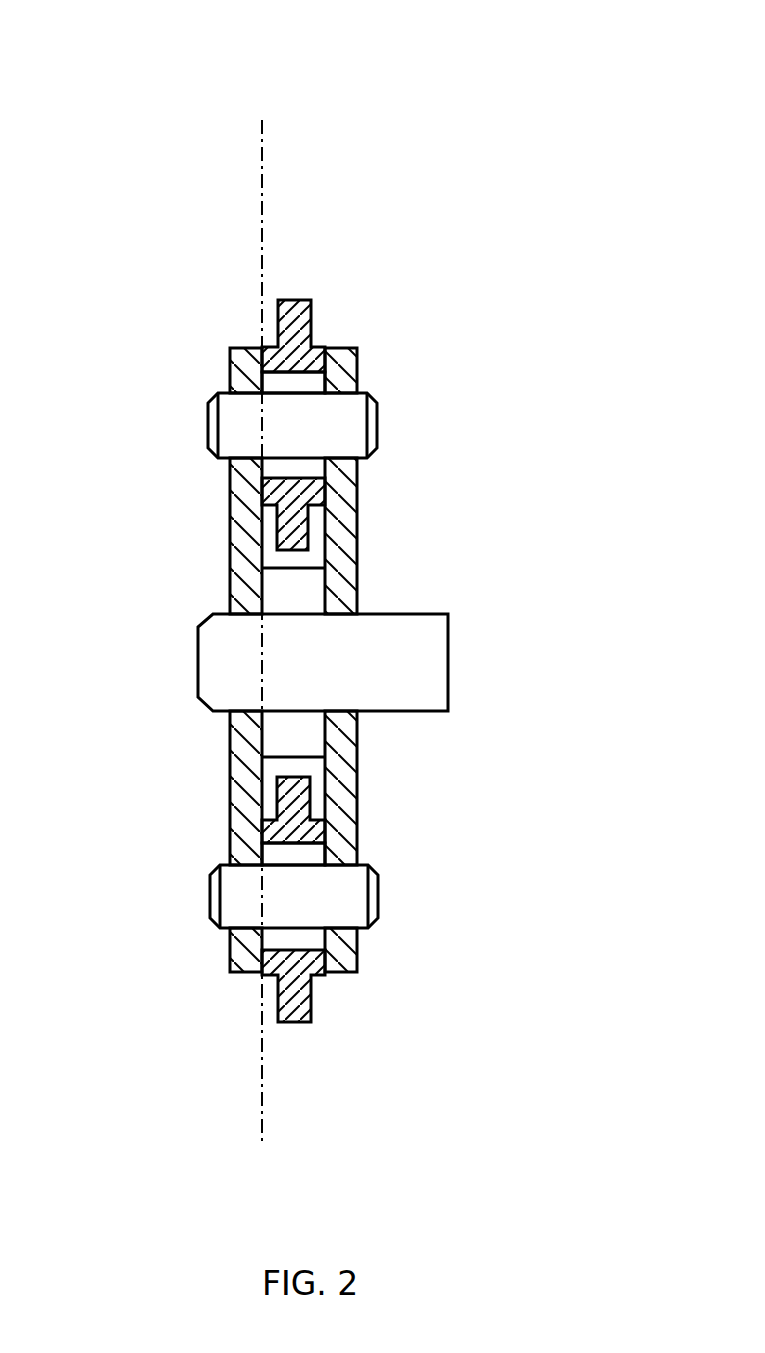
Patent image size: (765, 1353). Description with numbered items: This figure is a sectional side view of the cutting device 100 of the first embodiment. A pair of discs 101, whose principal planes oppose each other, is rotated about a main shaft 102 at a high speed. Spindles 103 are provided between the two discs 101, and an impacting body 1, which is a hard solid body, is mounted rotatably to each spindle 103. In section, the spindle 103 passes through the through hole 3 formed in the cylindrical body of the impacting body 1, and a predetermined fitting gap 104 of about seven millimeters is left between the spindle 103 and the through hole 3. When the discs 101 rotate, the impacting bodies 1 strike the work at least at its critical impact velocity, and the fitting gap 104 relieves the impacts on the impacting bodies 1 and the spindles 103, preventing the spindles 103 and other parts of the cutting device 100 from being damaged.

The cutting device 100 is at (328, 140).
The impacting body 1 is at (297, 302).
The through hole 3 is at (257, 135).
The disc 101 is at (343, 538).
The main shaft 102 is at (418, 663).
The spindle 103 is at (345, 426).
The fitting gap 104 is at (310, 382).